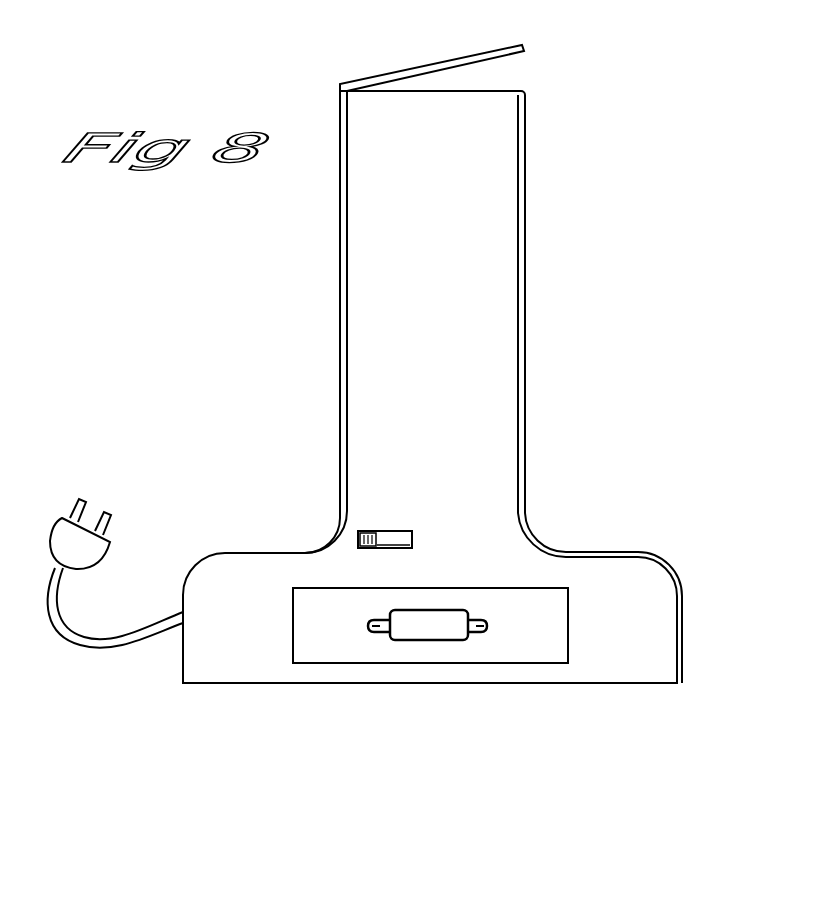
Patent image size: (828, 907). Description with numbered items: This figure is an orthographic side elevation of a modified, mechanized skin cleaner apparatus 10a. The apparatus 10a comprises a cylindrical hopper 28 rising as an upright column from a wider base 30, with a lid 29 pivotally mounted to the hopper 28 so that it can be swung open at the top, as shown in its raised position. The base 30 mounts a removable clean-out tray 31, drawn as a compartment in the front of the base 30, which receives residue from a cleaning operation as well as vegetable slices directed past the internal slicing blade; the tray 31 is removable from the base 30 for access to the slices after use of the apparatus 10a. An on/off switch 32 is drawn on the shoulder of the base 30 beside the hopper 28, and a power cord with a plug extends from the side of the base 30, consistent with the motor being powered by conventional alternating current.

The cylindrical hopper 28 is at (498, 208).
The lid 29 is at (448, 30).
The base 30 is at (650, 588).
The removable clean-out tray 31 is at (556, 650).
The on/off switch 32 is at (404, 540).
The modified skin cleaner apparatus 10a is at (507, 353).